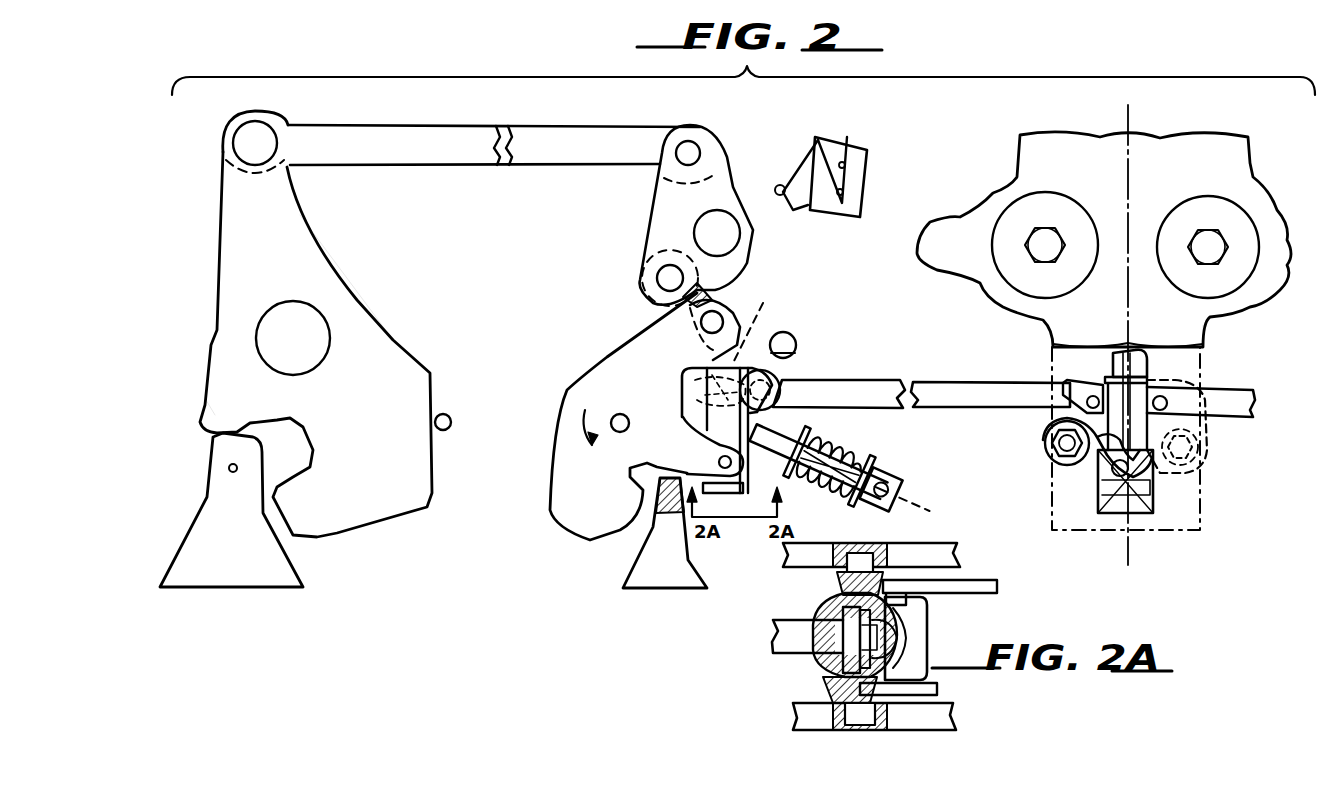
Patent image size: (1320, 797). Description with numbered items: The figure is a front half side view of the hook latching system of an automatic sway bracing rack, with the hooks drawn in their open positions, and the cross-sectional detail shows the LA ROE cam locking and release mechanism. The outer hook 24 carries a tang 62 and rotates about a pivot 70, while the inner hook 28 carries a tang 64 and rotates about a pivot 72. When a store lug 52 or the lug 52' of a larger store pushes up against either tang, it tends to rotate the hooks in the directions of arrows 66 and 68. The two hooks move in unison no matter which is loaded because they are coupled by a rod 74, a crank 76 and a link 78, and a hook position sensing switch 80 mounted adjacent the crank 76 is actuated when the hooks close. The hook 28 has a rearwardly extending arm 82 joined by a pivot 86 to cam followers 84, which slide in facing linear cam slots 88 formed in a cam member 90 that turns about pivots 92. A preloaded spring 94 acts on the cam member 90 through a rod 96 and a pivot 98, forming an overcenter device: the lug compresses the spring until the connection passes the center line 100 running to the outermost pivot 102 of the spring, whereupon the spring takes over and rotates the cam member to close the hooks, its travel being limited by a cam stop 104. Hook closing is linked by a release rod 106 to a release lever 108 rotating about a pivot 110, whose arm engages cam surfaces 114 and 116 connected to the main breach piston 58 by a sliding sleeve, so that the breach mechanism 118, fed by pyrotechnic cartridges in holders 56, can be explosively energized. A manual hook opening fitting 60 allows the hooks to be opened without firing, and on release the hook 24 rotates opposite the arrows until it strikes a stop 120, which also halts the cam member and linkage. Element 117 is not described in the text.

In FIG. 2, the outer hook 24 is at (395, 500).
In FIG. 2, the inner hook 28 is at (570, 530).
In FIG. 2, the lug 52 is at (654, 553).
In FIG. 2, the lug 52' is at (259, 511).
In FIG. 2, the pyrotechnic cartridge holder 56 is at (1172, 226).
In FIG. 2, the piston 58 is at (1150, 382).
In FIG. 2, the manual hook opening fitting 60 is at (1065, 458).
In FIG. 2, the tang 62 is at (230, 418).
In FIG. 2, the tang 64 is at (635, 465).
In FIG. 2, the arrow 66 is at (362, 375).
In FIG. 2, the arrow 68 is at (585, 425).
In FIG. 2, the pivot 70 is at (330, 318).
In FIG. 2, the pivot 72 is at (618, 413).
In FIG. 2, the rod 74 is at (495, 130).
In FIG. 2, the crank 76 is at (725, 165).
In FIG. 2, the link 78 is at (713, 293).
In FIG. 2, the hook position sensing switch 80 is at (865, 167).
In FIG. 2, the rearwardly extending arm 82 is at (705, 447).
In FIG. 2A, the rearwardly extending arm 82 is at (773, 640).
In FIG. 2, the cam followers 84 is at (728, 495).
In FIG. 2A, the cam followers 84 is at (832, 603).
In FIG. 2, the pivot 86 is at (718, 460).
In FIG. 2A, the pivot 86 is at (840, 630).
In FIG. 2, the linear cam slots 88 is at (680, 372).
In FIG. 2A, the linear cam slots 88 is at (900, 640).
In FIG. 2, the cam member 90 is at (780, 378).
In FIG. 2A, the cam member 90 is at (922, 615).
In FIG. 2, the pivots 92 is at (754, 328).
In FIG. 2A, the pivots 92 is at (883, 547).
In FIG. 2, the preloaded spring 94 is at (838, 418).
In FIG. 2, the rod 96 is at (841, 439).
In FIG. 2A, the rod 96 is at (935, 690).
In FIG. 2, the pivot 98 is at (682, 397).
In FIG. 2A, the pivot 98 is at (905, 677).
In FIG. 2, the center line 100 is at (859, 425).
In FIG. 2, the outermost pivot 102 is at (916, 453).
In FIG. 2, the cam stop 104 is at (790, 333).
In FIG. 2, the release rod 106 is at (905, 380).
In FIG. 2A, the release rod 106 is at (978, 585).
In FIG. 2, the release lever 108 is at (1080, 413).
In FIG. 2, the pivot 110 is at (1058, 445).
In FIG. 2, the cam surface 114 is at (1135, 480).
In FIG. 2, the cam surface 116 is at (1165, 475).
In FIG. 2, the block 117 is at (1098, 490).
In FIG. 2, the breach mechanism 118 is at (1200, 318).
In FIG. 2, the stop 120 is at (450, 418).